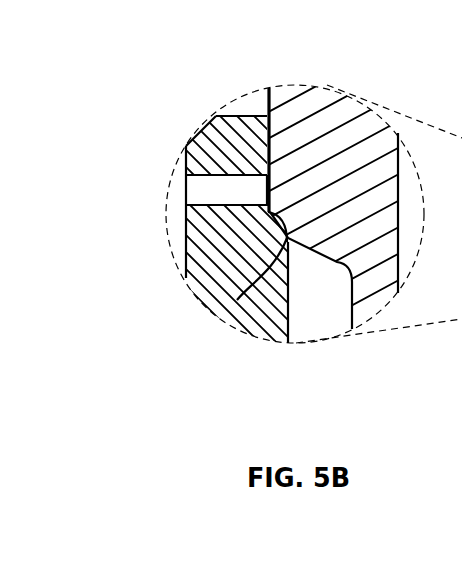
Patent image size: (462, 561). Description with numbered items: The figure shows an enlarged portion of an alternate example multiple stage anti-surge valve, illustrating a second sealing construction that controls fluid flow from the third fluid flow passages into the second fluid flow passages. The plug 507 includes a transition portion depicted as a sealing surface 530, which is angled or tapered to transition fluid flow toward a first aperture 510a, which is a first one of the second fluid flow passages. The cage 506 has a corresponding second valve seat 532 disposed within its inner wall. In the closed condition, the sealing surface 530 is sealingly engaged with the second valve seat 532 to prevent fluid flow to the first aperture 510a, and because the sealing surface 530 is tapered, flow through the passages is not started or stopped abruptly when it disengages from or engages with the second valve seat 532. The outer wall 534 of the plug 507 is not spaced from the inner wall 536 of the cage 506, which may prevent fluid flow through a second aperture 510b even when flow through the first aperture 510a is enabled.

The cage 506 is at (197, 280).
The plug 507 is at (338, 100).
The first aperture 510a is at (198, 191).
The second aperture 510b is at (238, 107).
The sealing surface 530 is at (338, 266).
The second valve seat 532 is at (237, 300).
The outer wall 534 is at (192, 144).
The inner wall 536 is at (262, 170).